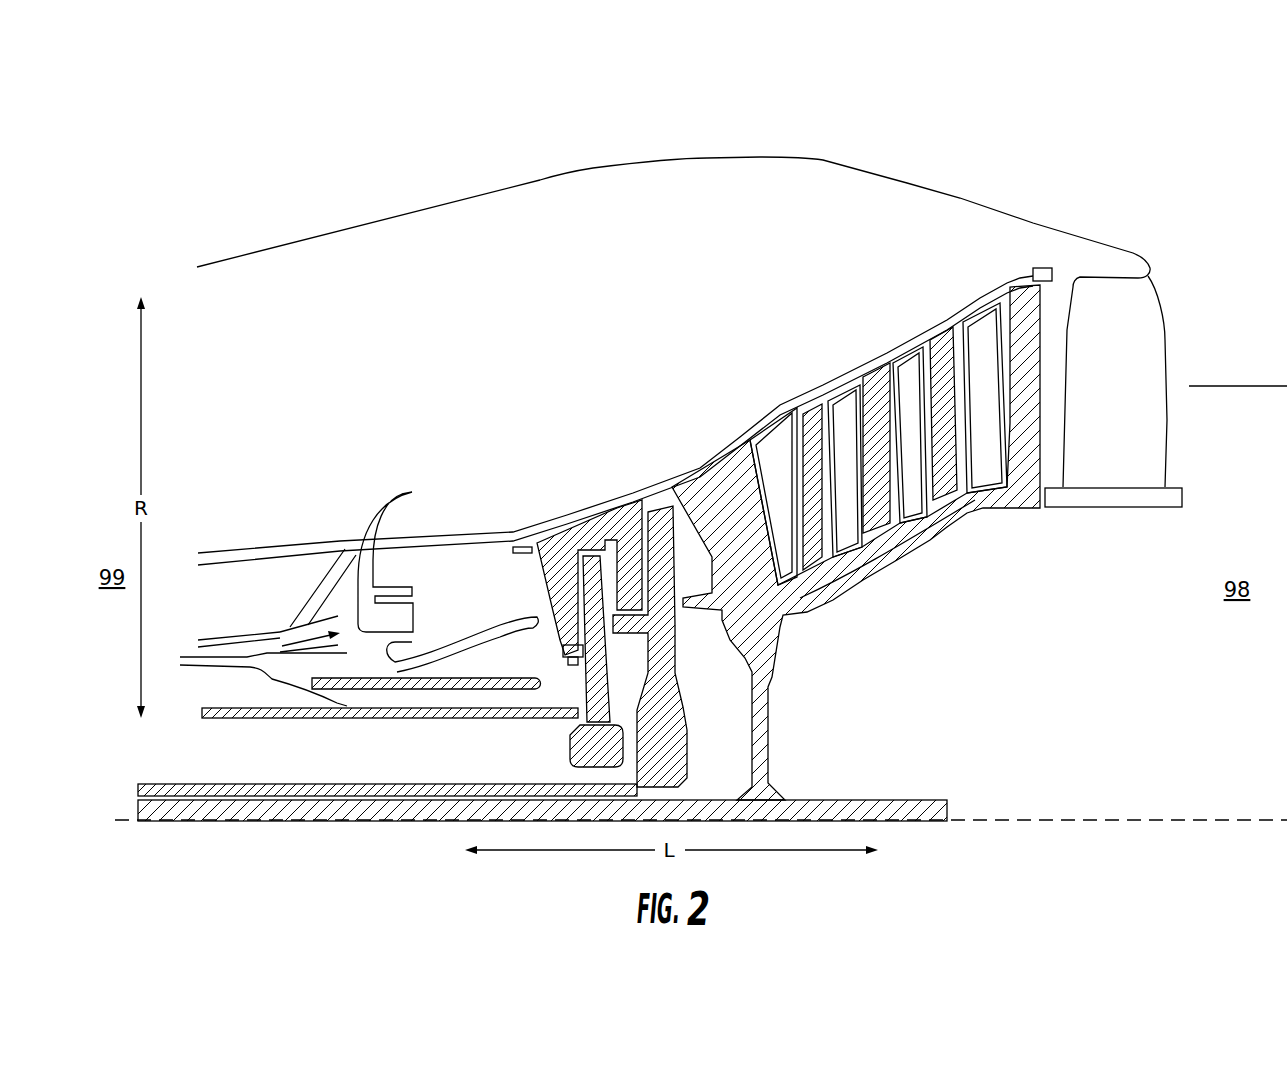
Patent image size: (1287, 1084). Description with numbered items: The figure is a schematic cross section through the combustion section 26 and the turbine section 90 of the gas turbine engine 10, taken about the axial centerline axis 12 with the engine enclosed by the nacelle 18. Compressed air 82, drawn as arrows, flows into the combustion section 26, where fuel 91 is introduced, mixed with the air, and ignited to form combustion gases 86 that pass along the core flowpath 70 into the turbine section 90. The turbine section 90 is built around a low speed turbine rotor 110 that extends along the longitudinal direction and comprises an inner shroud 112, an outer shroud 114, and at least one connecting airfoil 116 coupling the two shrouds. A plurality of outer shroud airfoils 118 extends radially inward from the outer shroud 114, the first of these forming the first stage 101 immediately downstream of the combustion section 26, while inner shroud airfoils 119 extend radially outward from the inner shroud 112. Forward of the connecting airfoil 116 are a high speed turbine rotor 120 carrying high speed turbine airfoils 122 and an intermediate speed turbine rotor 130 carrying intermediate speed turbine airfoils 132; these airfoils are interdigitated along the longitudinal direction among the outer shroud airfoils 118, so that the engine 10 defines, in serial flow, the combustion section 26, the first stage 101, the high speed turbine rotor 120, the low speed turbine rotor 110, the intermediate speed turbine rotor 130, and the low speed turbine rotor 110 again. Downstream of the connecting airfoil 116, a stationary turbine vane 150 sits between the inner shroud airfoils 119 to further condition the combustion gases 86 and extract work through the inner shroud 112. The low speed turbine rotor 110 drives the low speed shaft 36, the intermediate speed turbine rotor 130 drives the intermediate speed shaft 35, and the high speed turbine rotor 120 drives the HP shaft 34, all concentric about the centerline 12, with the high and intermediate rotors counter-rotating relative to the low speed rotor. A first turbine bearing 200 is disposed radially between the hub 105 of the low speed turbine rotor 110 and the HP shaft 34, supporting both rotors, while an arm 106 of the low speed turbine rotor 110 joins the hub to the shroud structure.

The gas turbine engine 10 is at (963, 107).
The axial centerline axis 12 is at (1123, 820).
The nacelle 18 is at (593, 187).
The combustion section 26 is at (448, 498).
The HP shaft 34 is at (520, 727).
The intermediate speed shaft 35 is at (200, 785).
The low speed shaft 36 is at (946, 812).
The core flowpath 70 is at (748, 467).
The compressed air 82 is at (295, 643).
The combustion gases 86 is at (1220, 386).
The turbine section 90 is at (752, 333).
The fuel 91 is at (430, 604).
The first stage 101 is at (535, 577).
The hub 105 is at (362, 681).
The arm 106 is at (593, 663).
The low speed turbine rotor 110 is at (848, 542).
The inner shroud 112 is at (848, 542).
The outer shroud 114 is at (556, 538).
The connecting airfoil 116 is at (712, 515).
The outer shroud airfoils 118 is at (630, 553).
The inner shroud airfoils 119 is at (815, 413).
The high speed turbine rotor 120 is at (641, 606).
The high speed turbine airfoils 122 is at (590, 570).
The intermediate speed turbine rotor 130 is at (668, 589).
The intermediate speed turbine airfoils 132 is at (630, 548).
The turbine vane 150 is at (858, 444).
The first turbine bearing 200 is at (377, 698).